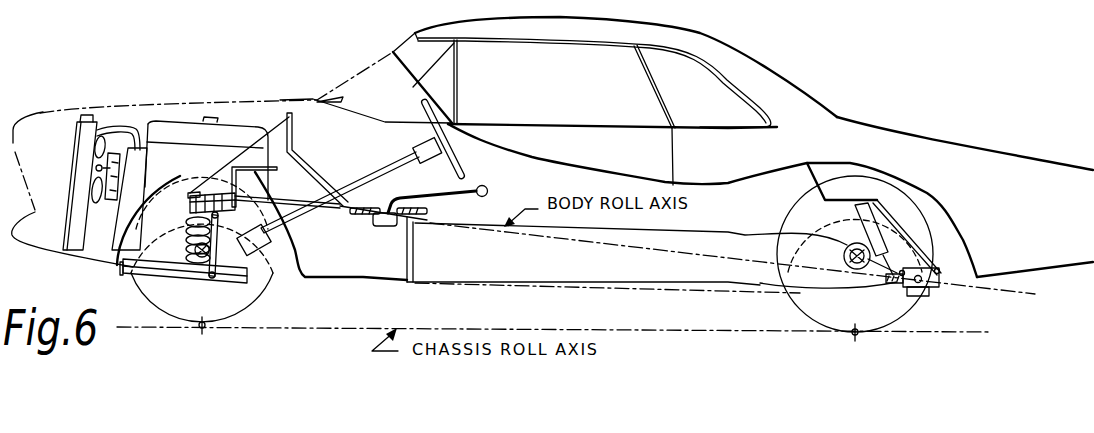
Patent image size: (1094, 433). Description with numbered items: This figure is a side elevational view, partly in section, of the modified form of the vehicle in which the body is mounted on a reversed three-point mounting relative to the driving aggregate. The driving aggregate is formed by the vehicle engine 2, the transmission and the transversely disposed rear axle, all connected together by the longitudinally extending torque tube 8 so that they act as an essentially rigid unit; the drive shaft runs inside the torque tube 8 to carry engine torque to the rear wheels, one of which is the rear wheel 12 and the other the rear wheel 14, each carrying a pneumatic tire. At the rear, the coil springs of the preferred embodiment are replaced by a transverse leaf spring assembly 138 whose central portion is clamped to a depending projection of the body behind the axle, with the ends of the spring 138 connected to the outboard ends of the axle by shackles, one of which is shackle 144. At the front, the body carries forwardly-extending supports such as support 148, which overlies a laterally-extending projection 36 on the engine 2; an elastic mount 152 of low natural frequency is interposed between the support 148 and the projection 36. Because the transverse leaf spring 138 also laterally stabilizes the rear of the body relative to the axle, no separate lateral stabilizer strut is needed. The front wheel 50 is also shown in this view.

The vehicle engine 2 is at (231, 117).
The torque tube 8 is at (581, 285).
The rear wheel 12 is at (908, 320).
The rear wheel 14 is at (843, 102).
The laterally-extending projection 36 is at (186, 225).
The front wheel 50 is at (271, 300).
The transverse leaf spring assembly 138 is at (945, 294).
The shackle 144 is at (938, 278).
The forwardly-extending support 148 is at (220, 183).
The elastic mount 152 is at (199, 194).